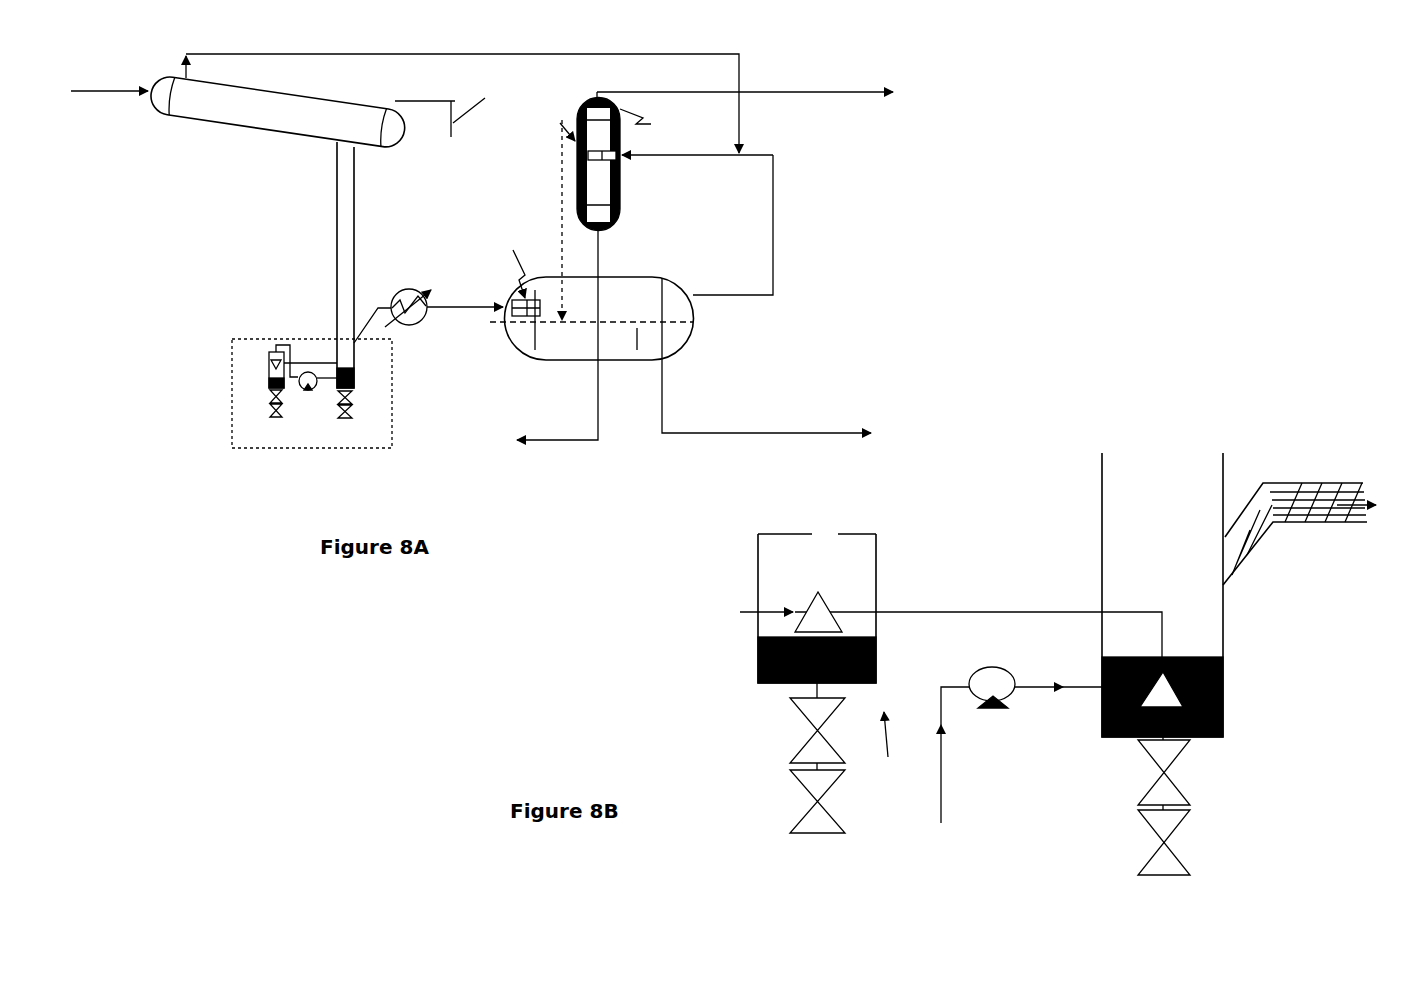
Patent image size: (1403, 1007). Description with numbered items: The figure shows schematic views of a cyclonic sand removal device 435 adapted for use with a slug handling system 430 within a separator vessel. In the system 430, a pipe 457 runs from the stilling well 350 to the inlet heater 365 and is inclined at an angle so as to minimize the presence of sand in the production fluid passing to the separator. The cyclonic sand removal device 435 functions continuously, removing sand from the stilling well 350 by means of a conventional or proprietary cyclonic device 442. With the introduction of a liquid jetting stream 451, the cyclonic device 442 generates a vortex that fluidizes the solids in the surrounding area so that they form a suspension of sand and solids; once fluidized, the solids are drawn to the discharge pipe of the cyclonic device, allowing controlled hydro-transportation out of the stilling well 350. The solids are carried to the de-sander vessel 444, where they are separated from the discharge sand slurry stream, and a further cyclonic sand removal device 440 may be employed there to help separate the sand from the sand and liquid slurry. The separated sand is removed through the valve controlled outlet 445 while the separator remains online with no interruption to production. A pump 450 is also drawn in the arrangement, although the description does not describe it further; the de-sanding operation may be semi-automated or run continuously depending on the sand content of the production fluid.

In FIG. 8A, the stilling well 350 is at (335, 220).
In FIG. 8B, the stilling well 350 is at (1098, 569).
In FIG. 8A, the inlet heater 365 is at (454, 328).
In FIG. 8B, the inlet heater 365 is at (1300, 534).
In FIG. 8A, the system 430 is at (170, 524).
In FIG. 8A, the cyclonic sand removal device 435 is at (232, 400).
In FIG. 8B, the cyclonic sand removal device 435 is at (621, 637).
In FIG. 8A, the further cyclonic sand removal device 440 is at (253, 348).
In FIG. 8B, the further cyclonic sand removal device 440 is at (920, 608).
In FIG. 8A, the cyclonic device 442 is at (358, 385).
In FIG. 8B, the cyclonic device 442 is at (1223, 683).
In FIG. 8B, the de-sander vessel 444 is at (893, 751).
In FIG. 8A, the valve controlled outlet 445 is at (267, 412).
In FIG. 8B, the valve controlled outlet 445 is at (765, 748).
In FIG. 8A, the pump 450 is at (303, 407).
In FIG. 8B, the pump 450 is at (1035, 706).
In FIG. 8B, the liquid jetting stream 451 is at (966, 784).
In FIG. 8A, the pipe 457 is at (362, 305).